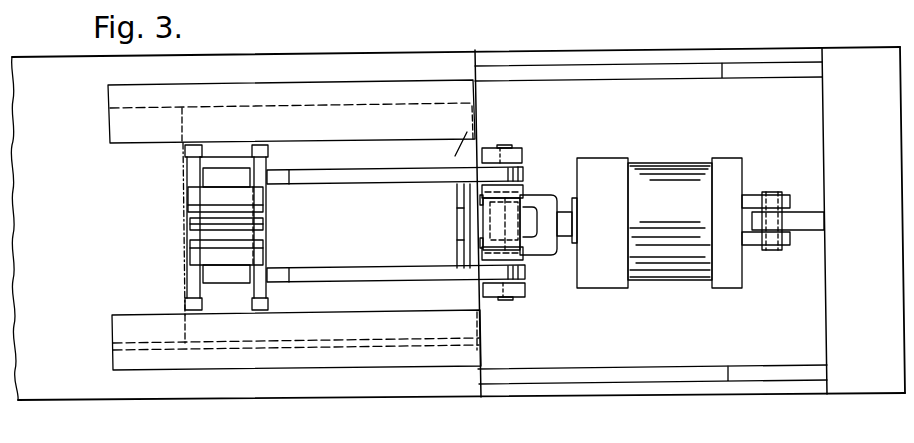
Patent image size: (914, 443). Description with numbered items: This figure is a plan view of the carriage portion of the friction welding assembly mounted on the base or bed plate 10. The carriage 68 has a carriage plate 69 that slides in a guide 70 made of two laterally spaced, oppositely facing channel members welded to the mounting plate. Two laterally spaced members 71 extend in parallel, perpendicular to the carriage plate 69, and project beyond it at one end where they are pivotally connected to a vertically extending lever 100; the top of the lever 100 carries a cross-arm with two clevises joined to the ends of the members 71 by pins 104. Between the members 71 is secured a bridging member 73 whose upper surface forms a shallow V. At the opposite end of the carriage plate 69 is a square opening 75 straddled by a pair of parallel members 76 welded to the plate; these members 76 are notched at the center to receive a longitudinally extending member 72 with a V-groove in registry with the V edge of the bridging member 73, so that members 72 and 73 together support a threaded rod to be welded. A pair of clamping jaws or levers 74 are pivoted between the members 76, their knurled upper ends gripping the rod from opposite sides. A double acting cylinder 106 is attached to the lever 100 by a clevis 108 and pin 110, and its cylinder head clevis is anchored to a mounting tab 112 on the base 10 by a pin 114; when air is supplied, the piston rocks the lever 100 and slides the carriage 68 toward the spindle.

The base or bed plate 10 is at (66, 382).
The carriage 68 is at (404, 223).
The carriage plate 69 is at (455, 156).
The guide 70 is at (333, 92).
The laterally spaced members 71 is at (342, 272).
The longitudinally extending member 72 is at (198, 227).
The bridging member 73 is at (461, 207).
The clamping jaws or levers 74 is at (218, 197).
The square opening 75 is at (227, 169).
The pair of members 76 is at (190, 172).
The lever 100 is at (516, 150).
The pins 104 is at (504, 146).
The double acting cylinder 106 is at (683, 211).
The clevis 108 is at (548, 200).
The pin 110 is at (507, 226).
The mounting tab 112 is at (810, 218).
The pin 114 is at (775, 192).